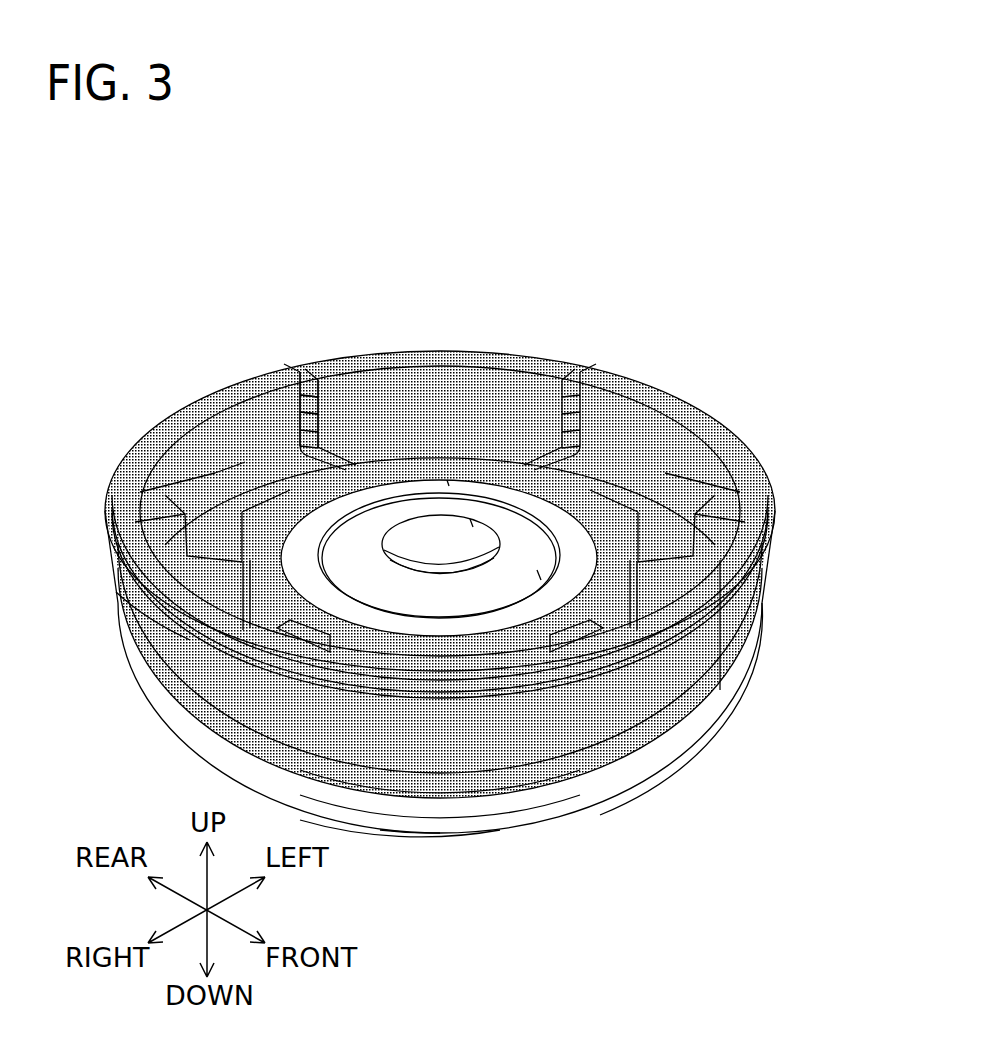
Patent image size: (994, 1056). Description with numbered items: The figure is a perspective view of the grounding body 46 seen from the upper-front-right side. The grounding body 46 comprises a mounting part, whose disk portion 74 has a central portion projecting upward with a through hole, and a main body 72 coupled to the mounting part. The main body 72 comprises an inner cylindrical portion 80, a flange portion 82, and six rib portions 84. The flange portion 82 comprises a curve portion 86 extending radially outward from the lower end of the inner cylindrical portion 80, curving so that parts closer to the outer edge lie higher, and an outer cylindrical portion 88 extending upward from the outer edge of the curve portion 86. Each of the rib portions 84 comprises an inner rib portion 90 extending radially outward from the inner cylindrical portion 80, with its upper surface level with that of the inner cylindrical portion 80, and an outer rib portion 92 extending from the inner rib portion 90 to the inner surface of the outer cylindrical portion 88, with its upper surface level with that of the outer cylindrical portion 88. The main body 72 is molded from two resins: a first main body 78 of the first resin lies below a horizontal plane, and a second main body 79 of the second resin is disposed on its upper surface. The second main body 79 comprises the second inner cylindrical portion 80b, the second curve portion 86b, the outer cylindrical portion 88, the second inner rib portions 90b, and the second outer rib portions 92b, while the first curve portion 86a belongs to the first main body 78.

The grounding body 46 is at (729, 228).
The main body 72 is at (439, 856).
The disk portion 74 is at (447, 483).
The first main body 78 is at (402, 858).
The second main body 79 is at (518, 324).
The inner cylindrical portion 80 is at (385, 470).
The second inner cylindrical portion 80b is at (130, 592).
The flange portion 82 is at (681, 803).
The rib portions 84 is at (260, 303).
The curve portion 86 is at (610, 908).
The first curve portion 86a is at (596, 797).
The second curve portion 86b is at (544, 780).
The outer cylindrical portion 88 is at (703, 477).
The inner rib portion 90 is at (272, 470).
The second inner rib portion 90b is at (232, 440).
The outer rib portion 92 is at (292, 400).
The second outer rib portion 92b is at (314, 395).